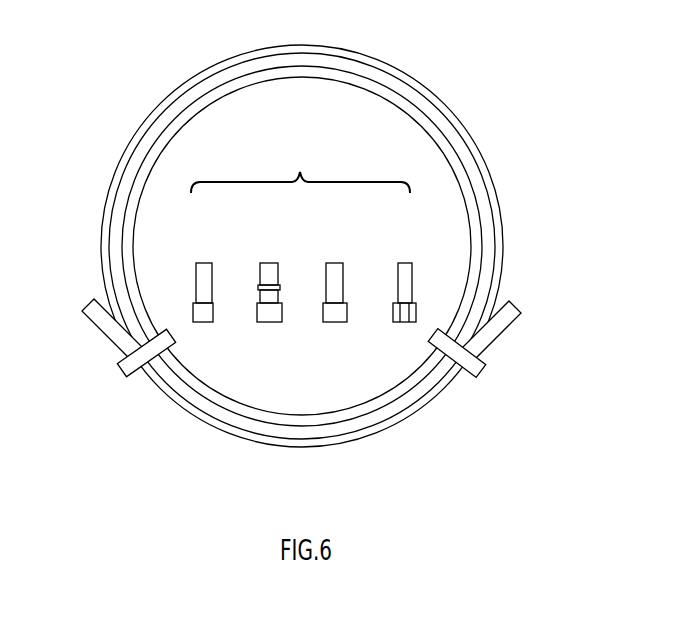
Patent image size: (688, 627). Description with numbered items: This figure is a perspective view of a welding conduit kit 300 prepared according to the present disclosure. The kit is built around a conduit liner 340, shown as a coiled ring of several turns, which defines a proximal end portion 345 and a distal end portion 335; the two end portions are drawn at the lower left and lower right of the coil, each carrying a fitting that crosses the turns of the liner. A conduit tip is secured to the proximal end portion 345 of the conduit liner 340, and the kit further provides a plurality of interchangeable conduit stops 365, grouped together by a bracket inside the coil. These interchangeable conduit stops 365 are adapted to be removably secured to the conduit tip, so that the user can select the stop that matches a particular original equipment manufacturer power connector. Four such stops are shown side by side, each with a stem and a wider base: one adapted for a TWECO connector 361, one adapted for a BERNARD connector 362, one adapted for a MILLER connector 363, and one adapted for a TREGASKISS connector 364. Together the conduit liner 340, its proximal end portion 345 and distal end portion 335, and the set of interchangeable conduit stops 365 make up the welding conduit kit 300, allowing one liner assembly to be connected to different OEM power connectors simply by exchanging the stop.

The welding conduit kit 300 is at (510, 101).
The conduit liner 340 is at (363, 70).
The interchangeable conduit stops 365 is at (541, 292).
The proximal end portion 345 is at (440, 374).
The distal end portion 335 is at (95, 316).
The TWECO conduit stop 361 is at (204, 263).
The BERNARD conduit stop 362 is at (270, 263).
The MILLER conduit stop 363 is at (335, 263).
The TREGASKISS conduit stop 364 is at (405, 263).